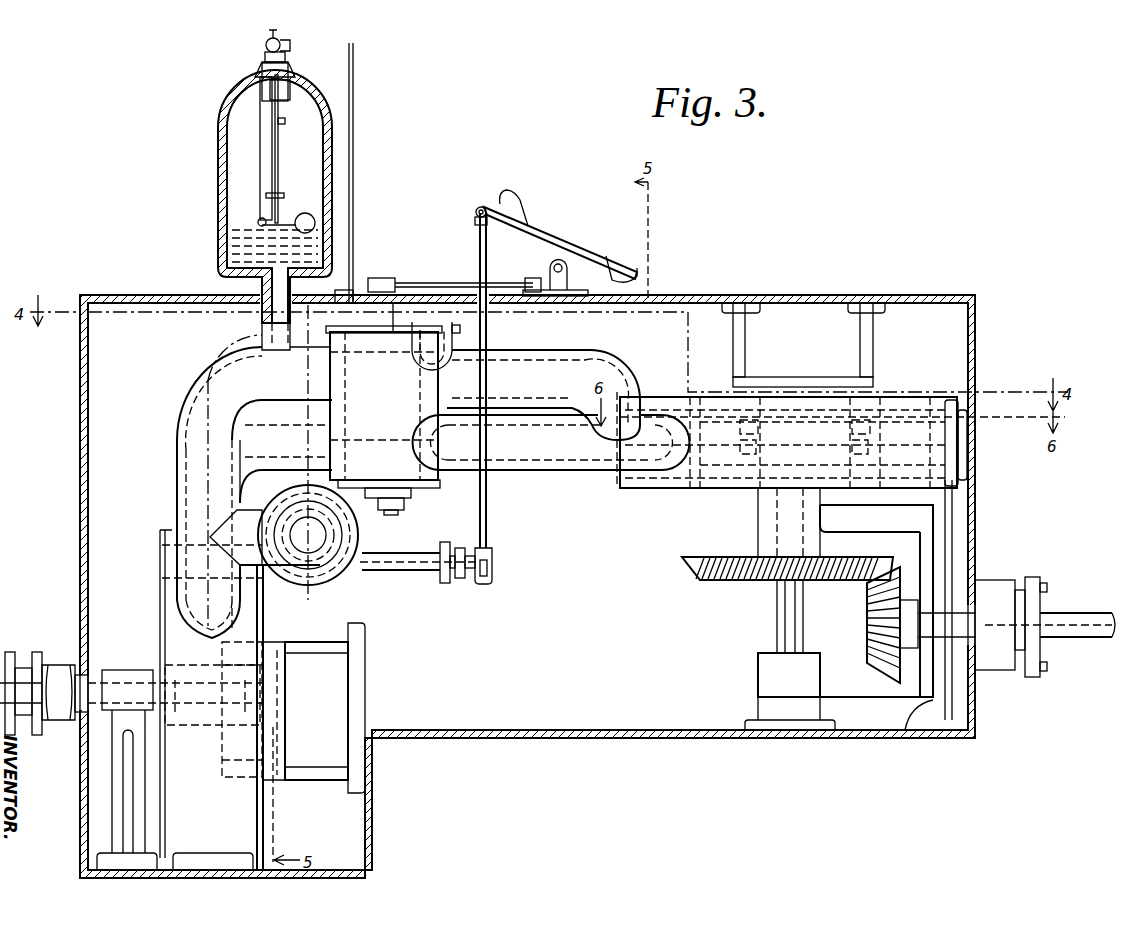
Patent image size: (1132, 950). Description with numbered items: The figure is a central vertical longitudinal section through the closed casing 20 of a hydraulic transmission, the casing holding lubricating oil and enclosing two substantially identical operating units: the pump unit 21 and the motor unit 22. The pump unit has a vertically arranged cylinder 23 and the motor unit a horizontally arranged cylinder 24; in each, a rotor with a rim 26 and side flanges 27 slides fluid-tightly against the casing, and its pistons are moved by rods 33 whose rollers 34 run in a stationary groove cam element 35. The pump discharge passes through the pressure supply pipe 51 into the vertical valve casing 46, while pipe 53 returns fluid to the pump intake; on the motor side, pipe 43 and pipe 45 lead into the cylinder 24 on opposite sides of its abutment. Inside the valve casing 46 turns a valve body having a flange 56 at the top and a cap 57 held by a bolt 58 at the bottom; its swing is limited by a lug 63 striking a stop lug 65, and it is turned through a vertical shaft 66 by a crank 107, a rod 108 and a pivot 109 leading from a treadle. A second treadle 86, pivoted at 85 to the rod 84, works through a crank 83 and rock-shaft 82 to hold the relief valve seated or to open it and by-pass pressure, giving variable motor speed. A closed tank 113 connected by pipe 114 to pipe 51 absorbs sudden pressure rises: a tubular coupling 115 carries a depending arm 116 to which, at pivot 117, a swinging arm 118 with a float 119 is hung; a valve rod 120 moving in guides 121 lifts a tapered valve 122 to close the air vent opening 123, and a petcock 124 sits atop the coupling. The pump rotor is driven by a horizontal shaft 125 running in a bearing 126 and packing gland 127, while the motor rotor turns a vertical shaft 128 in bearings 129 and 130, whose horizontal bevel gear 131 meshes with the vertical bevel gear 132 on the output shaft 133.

The closed casing 20 is at (792, 297).
The operating unit 21 is at (265, 624).
The operating unit 22 is at (745, 465).
The cylinder 23 is at (160, 612).
The cylinder 24 is at (815, 446).
The rim 26 is at (854, 455).
The side flanges 27 is at (905, 396).
The rods 33 is at (733, 456).
The rollers 34 is at (805, 423).
The cam element 35 is at (810, 378).
The pipe 43 is at (568, 470).
The pipe 45 is at (520, 352).
The valve casing 46 is at (384, 406).
The pressure supply pipe 51 is at (205, 400).
The pipe 53 is at (200, 487).
The flange 56 is at (373, 345).
The cap 57 is at (432, 490).
The bolt 58 is at (398, 512).
The lug 63 is at (461, 327).
The stop lug 65 is at (438, 370).
The vertical shaft 66 is at (394, 314).
The rock-shaft 82 is at (450, 586).
The crank 83 is at (488, 586).
The rod 84 is at (487, 517).
The pivotal connection 85 is at (481, 207).
The treadle 86 is at (556, 240).
The crank 107 is at (380, 278).
The rod 108 is at (446, 283).
The pivot 109 is at (540, 276).
The closed tank 113 is at (218, 163).
The pipe 114 is at (262, 330).
The tubular coupling 115 is at (256, 72).
The depending arm 116 is at (260, 190).
The pivot 117 is at (258, 223).
The vertically swinging arm 118 is at (292, 216).
The float 119 is at (318, 218).
The valve rod 120 is at (279, 162).
The guides 121 is at (282, 123).
The tapered valve 122 is at (290, 86).
The air vent opening 123 is at (282, 70).
The petcock 124 is at (266, 45).
The horizontal shaft 125 is at (84, 720).
The bearing 126 is at (128, 672).
The packing gland 127 is at (56, 656).
The vertical shaft 128 is at (775, 611).
The bearing 129 is at (822, 530).
The bearing 130 is at (756, 666).
The horizontal bevel gear 131 is at (696, 575).
The vertical bevel gear 132 is at (874, 662).
The shaft 133 is at (1088, 640).